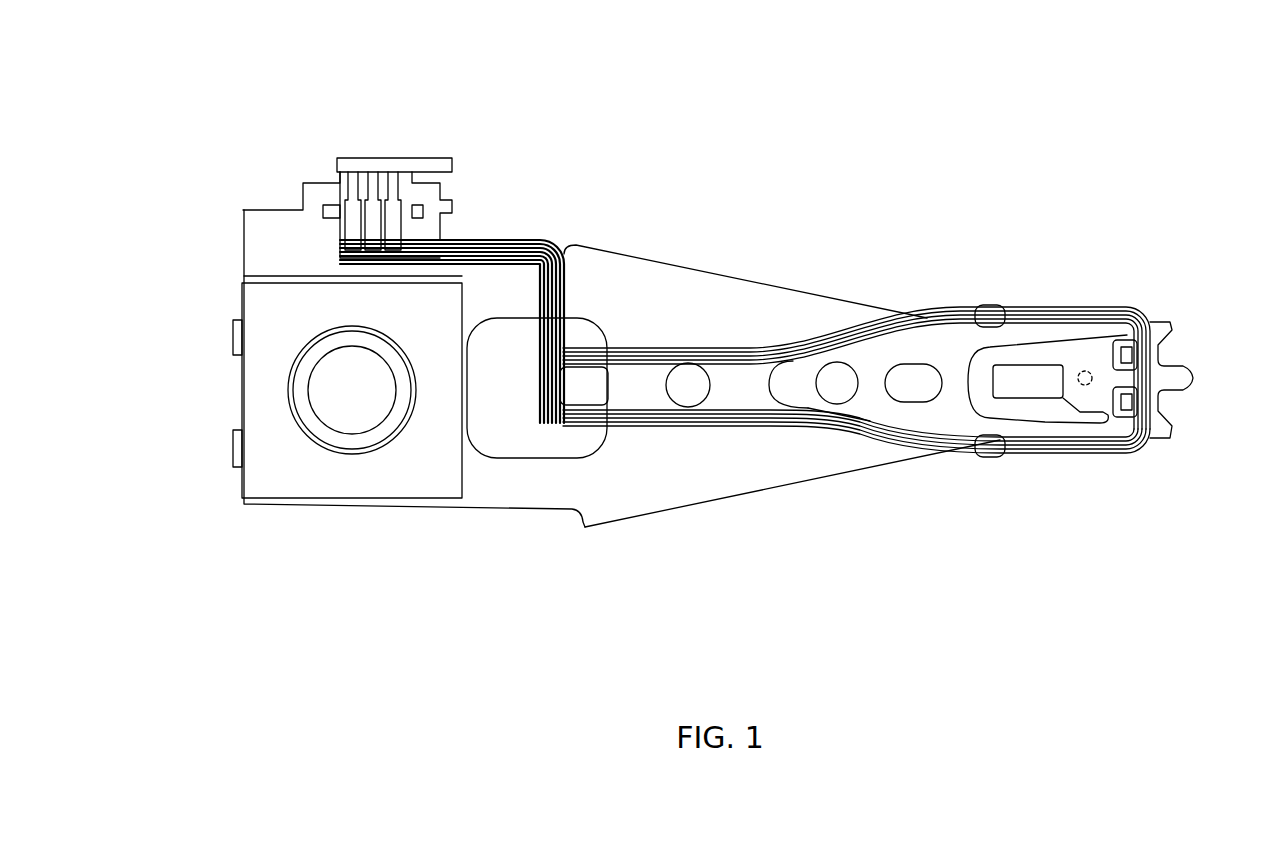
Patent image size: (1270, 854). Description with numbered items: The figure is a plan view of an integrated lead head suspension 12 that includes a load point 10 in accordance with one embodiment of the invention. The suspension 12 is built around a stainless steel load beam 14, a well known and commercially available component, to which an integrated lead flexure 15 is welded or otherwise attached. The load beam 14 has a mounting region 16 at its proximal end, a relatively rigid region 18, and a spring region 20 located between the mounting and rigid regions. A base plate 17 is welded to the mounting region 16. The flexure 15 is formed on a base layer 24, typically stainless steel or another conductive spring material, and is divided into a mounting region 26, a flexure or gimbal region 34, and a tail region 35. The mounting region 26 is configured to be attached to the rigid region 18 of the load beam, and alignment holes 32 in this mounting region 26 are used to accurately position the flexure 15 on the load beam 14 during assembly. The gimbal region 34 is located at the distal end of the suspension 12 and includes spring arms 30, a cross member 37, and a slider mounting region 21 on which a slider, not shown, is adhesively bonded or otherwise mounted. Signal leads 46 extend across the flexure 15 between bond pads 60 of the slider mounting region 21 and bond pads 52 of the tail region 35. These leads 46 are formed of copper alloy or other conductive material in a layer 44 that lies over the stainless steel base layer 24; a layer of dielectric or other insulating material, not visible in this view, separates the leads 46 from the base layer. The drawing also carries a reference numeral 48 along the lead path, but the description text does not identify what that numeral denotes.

The load point 10 is at (1085, 370).
The integrated lead head suspension 12 is at (606, 213).
The load beam 14 is at (722, 297).
The integrated lead flexure 15 is at (791, 320).
The mounting region 16 is at (452, 505).
The base plate 17 is at (307, 488).
The rigid region 18 is at (797, 445).
The spring region 20 is at (537, 498).
The slider mounting region 21 is at (1065, 372).
The base layer 24 is at (930, 432).
The mounting region 26 is at (853, 405).
The spring arms 30 is at (1110, 440).
The alignment holes 32 is at (838, 380).
The gimbal region 34 is at (1072, 468).
The tail region 35 is at (406, 146).
The cross member 37 is at (1107, 355).
The layer 44 is at (732, 423).
The signal leads 46 is at (662, 423).
The flex circuit cable 48 is at (497, 240).
The bond pads 52 is at (343, 173).
The bond pads 60 is at (1133, 412).